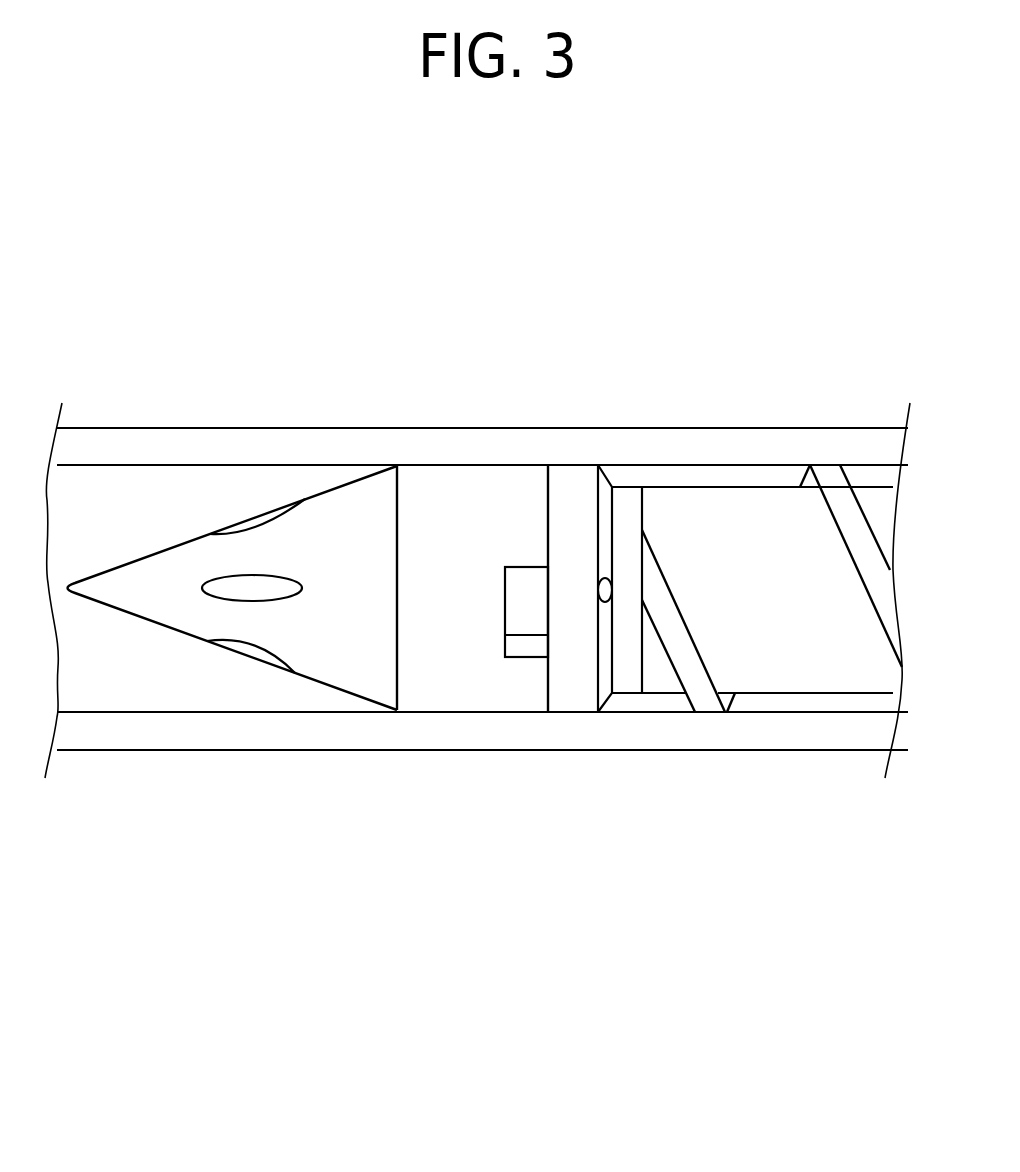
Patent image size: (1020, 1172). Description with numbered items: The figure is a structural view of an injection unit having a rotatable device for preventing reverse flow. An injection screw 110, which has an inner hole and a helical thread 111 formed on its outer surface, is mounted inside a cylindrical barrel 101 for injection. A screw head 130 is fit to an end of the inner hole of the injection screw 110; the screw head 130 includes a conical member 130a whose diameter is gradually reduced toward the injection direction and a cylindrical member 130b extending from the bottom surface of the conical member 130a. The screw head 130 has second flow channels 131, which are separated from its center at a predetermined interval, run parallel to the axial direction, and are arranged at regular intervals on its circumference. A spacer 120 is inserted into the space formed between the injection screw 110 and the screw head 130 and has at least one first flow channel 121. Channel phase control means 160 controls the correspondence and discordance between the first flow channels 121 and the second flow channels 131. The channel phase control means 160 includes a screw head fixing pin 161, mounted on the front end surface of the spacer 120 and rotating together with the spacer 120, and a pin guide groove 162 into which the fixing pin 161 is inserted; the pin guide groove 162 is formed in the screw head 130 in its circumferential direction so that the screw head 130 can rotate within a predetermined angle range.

The cylindrical barrel 101 is at (227, 428).
The injection screw 110 is at (748, 472).
The helical thread 111 is at (836, 485).
The spacer 120 is at (580, 452).
The first flow channel 121 is at (610, 598).
The screw head 130 is at (318, 458).
The conical member 130a is at (355, 672).
The cylindrical member 130b is at (485, 692).
The second flow channel 131 is at (237, 590).
The channel phase control means 160 is at (490, 645).
The screw head fixing pin 161 is at (527, 648).
The pin guide groove 162 is at (523, 607).